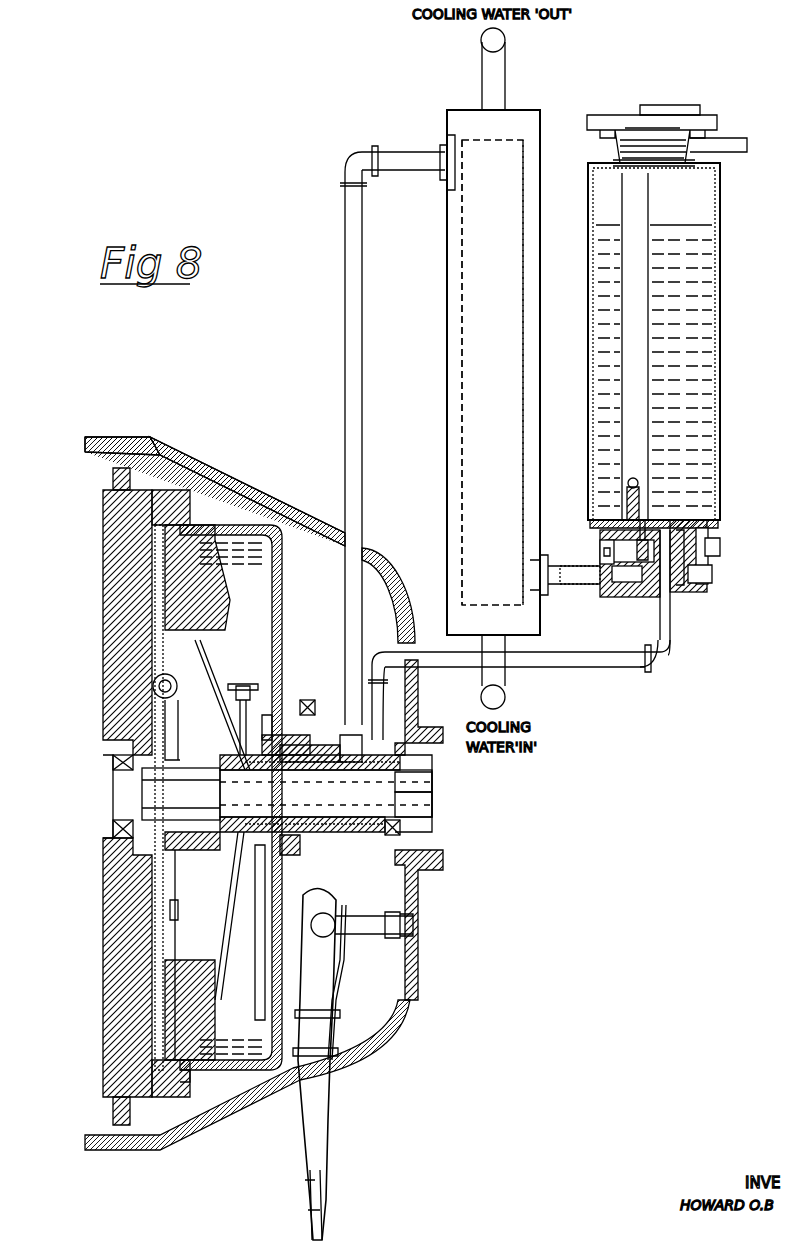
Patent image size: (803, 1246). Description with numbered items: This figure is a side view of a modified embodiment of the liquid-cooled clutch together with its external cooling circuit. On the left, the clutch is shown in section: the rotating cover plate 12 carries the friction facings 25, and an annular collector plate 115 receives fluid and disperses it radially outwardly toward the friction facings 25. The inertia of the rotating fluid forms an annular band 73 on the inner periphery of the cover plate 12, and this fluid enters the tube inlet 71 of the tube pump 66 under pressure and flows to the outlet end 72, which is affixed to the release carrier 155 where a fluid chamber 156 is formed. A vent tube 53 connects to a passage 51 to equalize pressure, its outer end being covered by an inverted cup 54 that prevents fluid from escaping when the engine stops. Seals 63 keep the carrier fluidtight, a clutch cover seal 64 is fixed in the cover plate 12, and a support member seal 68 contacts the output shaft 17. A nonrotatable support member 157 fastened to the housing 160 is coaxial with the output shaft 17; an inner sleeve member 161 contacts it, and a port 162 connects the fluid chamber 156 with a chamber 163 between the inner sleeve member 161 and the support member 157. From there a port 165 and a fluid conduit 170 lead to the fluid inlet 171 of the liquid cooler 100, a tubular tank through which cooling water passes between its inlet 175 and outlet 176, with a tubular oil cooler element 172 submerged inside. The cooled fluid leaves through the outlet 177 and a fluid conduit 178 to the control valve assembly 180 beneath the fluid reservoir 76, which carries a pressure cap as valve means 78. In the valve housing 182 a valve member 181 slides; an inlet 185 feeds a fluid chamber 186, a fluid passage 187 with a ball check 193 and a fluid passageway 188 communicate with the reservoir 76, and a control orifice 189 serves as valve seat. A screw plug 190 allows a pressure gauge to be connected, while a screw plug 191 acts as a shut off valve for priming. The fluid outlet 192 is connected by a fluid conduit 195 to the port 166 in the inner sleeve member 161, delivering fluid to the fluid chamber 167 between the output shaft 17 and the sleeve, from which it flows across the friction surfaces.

The cover plate 12 is at (282, 600).
The output shaft 17 is at (418, 767).
The friction facings 25 is at (135, 563).
The passage 51 is at (298, 710).
The vent tube 53 is at (236, 700).
The inverted cup 54 is at (252, 690).
The seals 63 is at (326, 793).
The clutch cover seal 64 is at (286, 710).
The tube pump 66 is at (240, 925).
The support member seal 68 is at (405, 828).
The tube inlet 71 is at (244, 1074).
The outlet end 72 is at (228, 870).
The annular band 73 is at (208, 568).
The fluid reservoir 76 is at (720, 312).
The valve means 78 is at (660, 110).
The liquid cooler 100 is at (447, 262).
The annular collector plate 115 is at (178, 700).
The release carrier 155 is at (308, 732).
The fluid chamber 156 is at (272, 875).
The support member 157 is at (200, 770).
The housing 160 is at (255, 503).
The inner sleeve member 161 is at (316, 815).
The port 162 is at (268, 770).
The chamber 163 is at (352, 815).
The port 165 is at (350, 740).
The port 166 is at (433, 779).
The fluid chamber 167 is at (433, 797).
The fluid conduit 170 is at (345, 603).
The fluid inlet 171 is at (445, 158).
The oil cooler element 172 is at (460, 226).
The inlet 175 is at (481, 694).
The outlet 176 is at (506, 40).
The outlet 177 is at (542, 600).
The fluid conduit 178 is at (552, 562).
The control valve assembly 180 is at (625, 608).
The valve member 181 is at (600, 548).
The valve housing 182 is at (610, 600).
The inlet 185 is at (605, 580).
The fluid chamber 186 is at (652, 600).
The fluid passage 187 is at (645, 520).
The fluid passageway 188 is at (708, 540).
The control orifice 189 is at (678, 520).
The screw plug 190 is at (721, 548).
The screw plug 191 is at (713, 575).
The fluid outlet 192 is at (672, 592).
The ball check 193 is at (627, 482).
The fluid conduit 195 is at (585, 668).